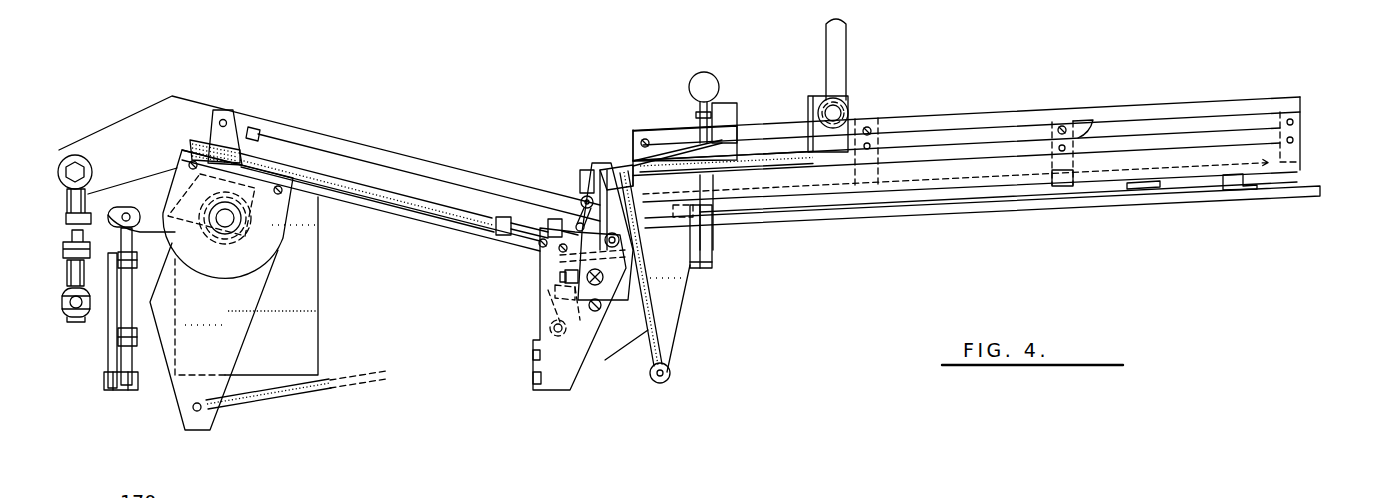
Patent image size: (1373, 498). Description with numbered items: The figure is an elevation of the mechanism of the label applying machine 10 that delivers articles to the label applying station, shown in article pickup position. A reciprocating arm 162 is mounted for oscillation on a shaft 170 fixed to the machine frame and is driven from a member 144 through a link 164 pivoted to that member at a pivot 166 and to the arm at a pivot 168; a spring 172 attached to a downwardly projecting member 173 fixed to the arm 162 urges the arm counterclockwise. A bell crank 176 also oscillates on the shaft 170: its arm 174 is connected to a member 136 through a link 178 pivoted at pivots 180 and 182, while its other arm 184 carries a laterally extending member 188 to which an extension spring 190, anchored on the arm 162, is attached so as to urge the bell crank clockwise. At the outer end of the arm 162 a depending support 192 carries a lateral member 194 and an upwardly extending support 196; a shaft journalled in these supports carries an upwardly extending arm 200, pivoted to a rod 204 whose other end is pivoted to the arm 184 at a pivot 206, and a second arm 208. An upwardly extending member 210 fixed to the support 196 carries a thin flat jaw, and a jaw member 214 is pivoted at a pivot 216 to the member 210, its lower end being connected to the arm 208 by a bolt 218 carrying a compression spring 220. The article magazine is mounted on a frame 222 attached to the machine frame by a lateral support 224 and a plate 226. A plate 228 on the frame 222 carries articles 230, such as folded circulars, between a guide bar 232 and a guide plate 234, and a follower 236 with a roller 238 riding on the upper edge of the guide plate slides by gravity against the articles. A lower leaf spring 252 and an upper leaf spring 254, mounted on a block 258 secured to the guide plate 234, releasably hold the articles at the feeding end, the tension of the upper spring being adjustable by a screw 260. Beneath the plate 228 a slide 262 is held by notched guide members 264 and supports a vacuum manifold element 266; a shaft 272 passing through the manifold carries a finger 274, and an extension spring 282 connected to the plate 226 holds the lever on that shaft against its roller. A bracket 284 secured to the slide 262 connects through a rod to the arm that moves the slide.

The label applying machine 10 is at (319, 328).
The member 136 is at (108, 330).
The member 144 is at (68, 497).
The reciprocating arm 162 is at (178, 123).
The link 164 is at (63, 265).
The pivot 166 is at (60, 305).
The pivot 168 is at (77, 165).
The shaft 170 is at (226, 226).
The spring 172 is at (303, 394).
The member 173 is at (180, 390).
The arm 174 is at (155, 207).
The bell crank 176 is at (258, 219).
The link 178 is at (130, 313).
The pivot 180 is at (135, 377).
The pivot 182 is at (126, 213).
The arm 184 is at (240, 112).
The laterally extending member 188 is at (203, 136).
The extension spring 190 is at (457, 208).
The support 192 is at (540, 322).
The lateral member 194 is at (533, 378).
The upwardly extending support 196 is at (570, 367).
The upwardly extending arm 200 is at (563, 272).
The rod 204 is at (362, 162).
The pivot 206 is at (224, 119).
The second upwardly extending arm 208 is at (548, 308).
The upwardly extending member 210 is at (611, 164).
The jaw member 214 is at (622, 167).
The pivot 216 is at (641, 268).
The bolt 218 is at (545, 285).
The compression spring 220 is at (560, 280).
The frame 222 is at (918, 213).
The lateral support 224 is at (705, 255).
The plate 226 is at (672, 320).
The plate 228 is at (1302, 148).
The articles 230 is at (760, 157).
The guide bar 232 is at (1182, 152).
The guide plate 234 is at (1127, 117).
The follower 236 is at (807, 98).
The roller 238 is at (848, 108).
The lower leaf spring 252 is at (693, 157).
The upper leaf spring 254 is at (663, 150).
The block 258 is at (730, 108).
The screw 260 is at (720, 67).
The slide 262 is at (1188, 190).
The guide members 264 is at (697, 212).
The manifold element 266 is at (584, 170).
The shaft 272 is at (577, 214).
The finger 274 is at (581, 198).
The extension spring 282 is at (608, 350).
The bracket 284 is at (1148, 190).